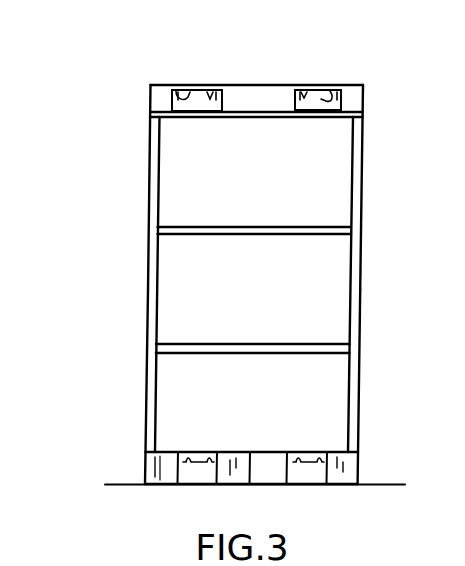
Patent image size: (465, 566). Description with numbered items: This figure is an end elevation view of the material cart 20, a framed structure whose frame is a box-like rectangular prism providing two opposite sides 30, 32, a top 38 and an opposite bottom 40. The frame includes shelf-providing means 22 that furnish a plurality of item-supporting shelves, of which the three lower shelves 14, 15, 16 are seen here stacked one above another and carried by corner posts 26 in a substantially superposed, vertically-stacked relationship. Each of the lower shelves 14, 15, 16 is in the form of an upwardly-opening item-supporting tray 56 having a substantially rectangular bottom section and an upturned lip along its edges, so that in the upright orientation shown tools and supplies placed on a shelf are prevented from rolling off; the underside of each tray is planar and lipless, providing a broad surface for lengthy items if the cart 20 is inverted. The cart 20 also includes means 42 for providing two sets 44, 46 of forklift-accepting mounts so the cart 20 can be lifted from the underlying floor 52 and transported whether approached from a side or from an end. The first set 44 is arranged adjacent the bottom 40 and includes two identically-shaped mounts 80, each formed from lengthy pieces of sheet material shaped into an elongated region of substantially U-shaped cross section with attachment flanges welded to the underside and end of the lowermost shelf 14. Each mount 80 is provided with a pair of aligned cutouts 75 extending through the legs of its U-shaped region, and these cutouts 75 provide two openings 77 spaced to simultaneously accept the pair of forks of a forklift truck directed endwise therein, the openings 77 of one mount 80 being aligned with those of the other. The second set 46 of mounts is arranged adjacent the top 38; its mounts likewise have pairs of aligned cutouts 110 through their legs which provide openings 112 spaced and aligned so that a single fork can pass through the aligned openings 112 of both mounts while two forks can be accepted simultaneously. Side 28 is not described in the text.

The item-supporting shelf 14 is at (262, 452).
The item-supporting shelf 15 is at (252, 344).
The item-supporting shelf 16 is at (250, 226).
The material cart 20 is at (393, 211).
The shelf-providing means 22 is at (114, 334).
The corner post 26 is at (148, 269).
The right side wall 28 is at (362, 295).
The side of the cart 30 is at (146, 382).
The side of the cart 32 is at (360, 408).
The top of the cart 38 is at (272, 84).
The bottom of the cart 40 is at (292, 478).
The mount-providing means 42 is at (132, 73).
The first set of forklift-accepting mounts 44 is at (92, 478).
The second set of forklift-accepting mounts 46 is at (128, 130).
The floor 52 is at (248, 452).
The item-supporting tray 56 is at (405, 565).
The aligned cutouts 75 is at (215, 477).
The opening 77 is at (185, 476).
The mount 80 is at (143, 472).
The aligned cutouts 110 is at (219, 94).
The opening 112 is at (175, 94).